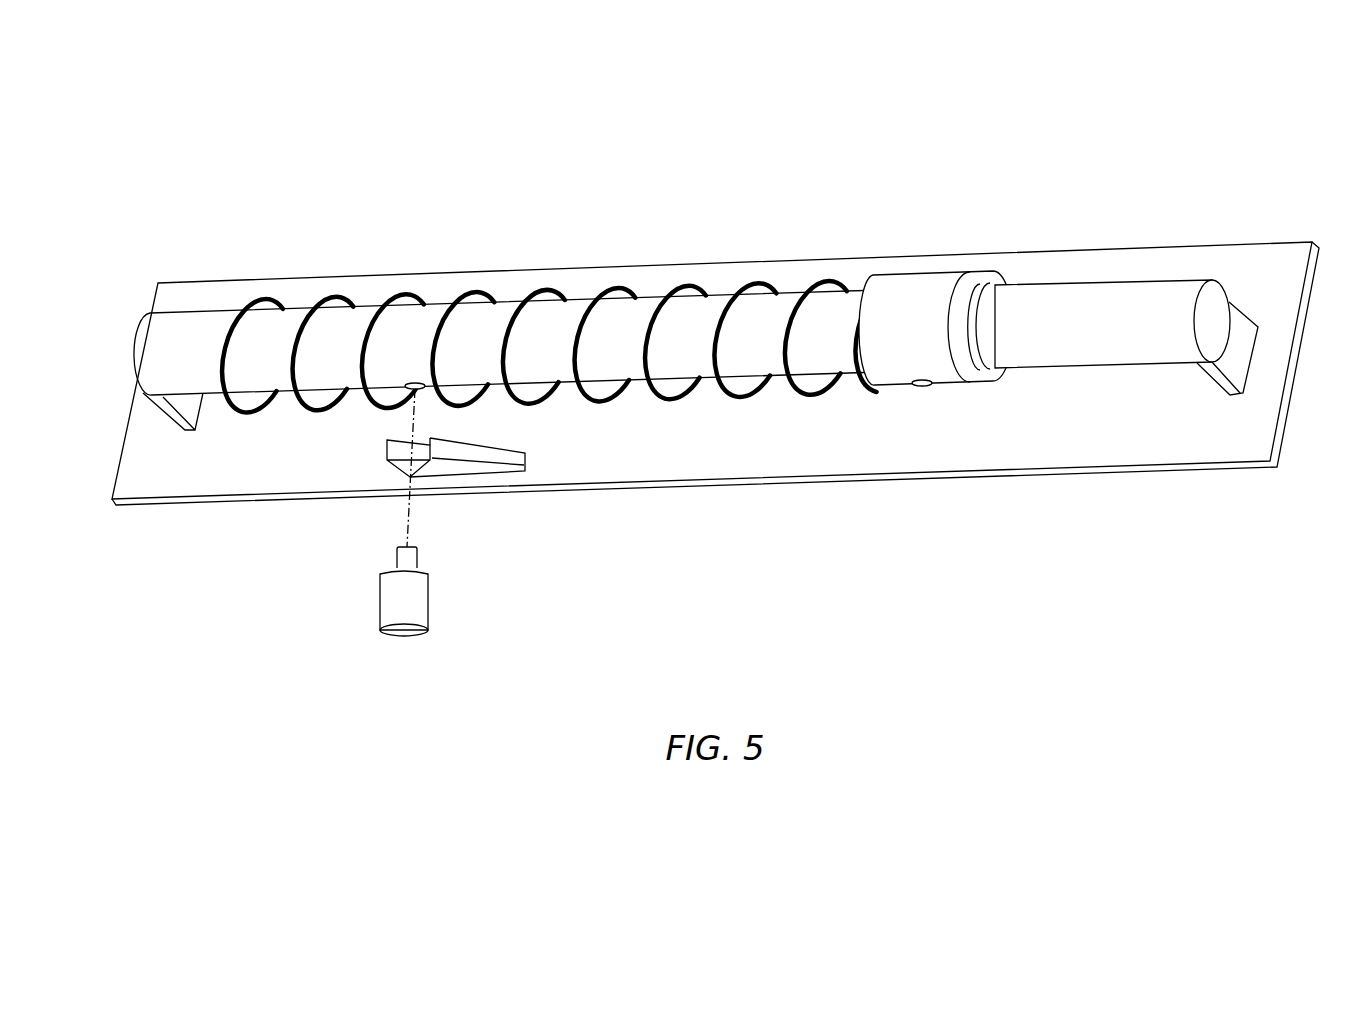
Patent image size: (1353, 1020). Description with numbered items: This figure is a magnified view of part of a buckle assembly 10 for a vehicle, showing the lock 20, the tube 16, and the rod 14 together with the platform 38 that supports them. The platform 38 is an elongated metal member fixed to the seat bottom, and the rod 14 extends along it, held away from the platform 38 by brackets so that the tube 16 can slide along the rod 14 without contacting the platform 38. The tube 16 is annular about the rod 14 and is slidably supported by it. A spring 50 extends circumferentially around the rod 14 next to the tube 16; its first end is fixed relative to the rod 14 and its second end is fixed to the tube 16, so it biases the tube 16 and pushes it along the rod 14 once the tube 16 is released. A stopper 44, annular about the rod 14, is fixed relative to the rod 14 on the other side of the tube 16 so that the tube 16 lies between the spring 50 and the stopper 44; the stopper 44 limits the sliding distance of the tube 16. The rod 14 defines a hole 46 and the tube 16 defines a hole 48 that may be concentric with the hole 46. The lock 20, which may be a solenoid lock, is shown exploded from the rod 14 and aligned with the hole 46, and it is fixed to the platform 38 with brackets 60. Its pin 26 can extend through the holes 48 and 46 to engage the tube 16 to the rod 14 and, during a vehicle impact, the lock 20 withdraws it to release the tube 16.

The buckle assembly 10 is at (175, 165).
The rod 14 is at (1110, 297).
The tube 16 is at (912, 272).
The lock 20 is at (380, 616).
The sensor probe 26 is at (396, 556).
The platform 38 is at (606, 267).
The stopper 44 is at (985, 272).
The hole 46 is at (408, 390).
The hole 48 is at (927, 388).
The spring 50 is at (407, 296).
The brackets 60 is at (478, 457).